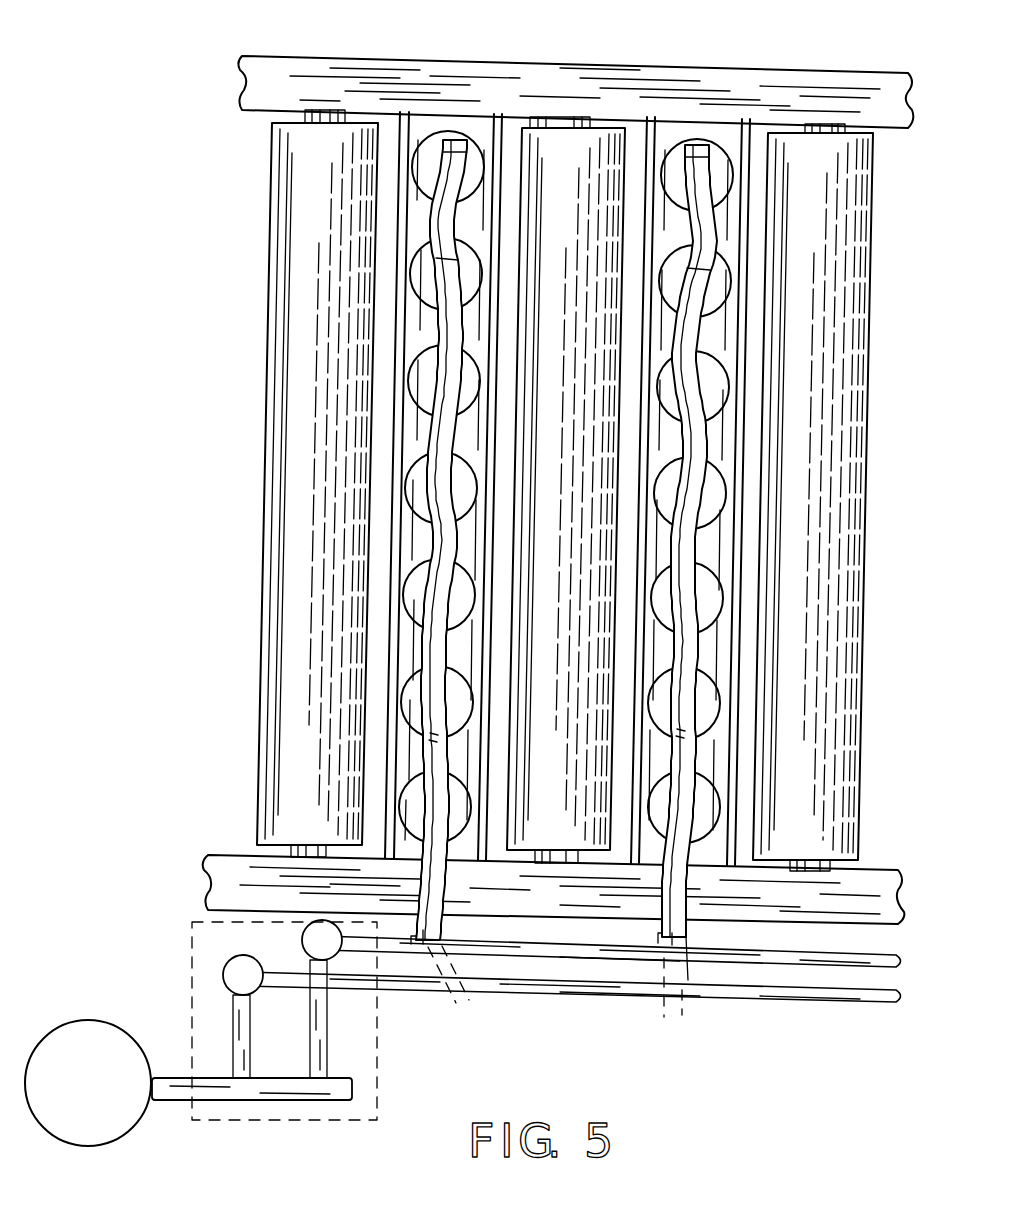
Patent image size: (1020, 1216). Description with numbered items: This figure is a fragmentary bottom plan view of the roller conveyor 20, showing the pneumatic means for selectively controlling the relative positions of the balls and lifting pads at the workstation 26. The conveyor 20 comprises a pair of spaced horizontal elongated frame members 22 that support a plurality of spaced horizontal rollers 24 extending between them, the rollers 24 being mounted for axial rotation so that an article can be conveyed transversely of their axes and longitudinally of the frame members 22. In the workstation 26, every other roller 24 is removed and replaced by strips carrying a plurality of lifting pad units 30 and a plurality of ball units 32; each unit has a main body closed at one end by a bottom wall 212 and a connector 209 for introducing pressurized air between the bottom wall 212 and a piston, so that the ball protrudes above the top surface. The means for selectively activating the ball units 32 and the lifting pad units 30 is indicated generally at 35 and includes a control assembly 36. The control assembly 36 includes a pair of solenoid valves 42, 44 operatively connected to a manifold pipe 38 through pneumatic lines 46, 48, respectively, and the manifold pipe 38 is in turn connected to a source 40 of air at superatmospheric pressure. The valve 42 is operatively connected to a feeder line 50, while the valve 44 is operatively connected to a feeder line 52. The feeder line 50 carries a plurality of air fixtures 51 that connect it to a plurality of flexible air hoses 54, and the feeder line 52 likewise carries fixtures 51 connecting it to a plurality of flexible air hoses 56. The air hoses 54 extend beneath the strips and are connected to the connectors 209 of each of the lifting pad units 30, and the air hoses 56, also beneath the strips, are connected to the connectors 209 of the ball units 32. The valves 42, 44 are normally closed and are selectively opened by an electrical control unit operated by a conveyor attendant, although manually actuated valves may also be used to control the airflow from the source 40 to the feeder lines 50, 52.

The roller conveyor 20 is at (785, 40).
The frame members 22 is at (258, 72).
The rollers 24 is at (538, 117).
The workstation 26 is at (646, 51).
The lifting pad units 30 is at (400, 288).
The ball units 32 is at (410, 189).
The means for selectively activating the ball units and lifting pad units 35 is at (316, 1148).
The control assembly 36 is at (199, 992).
The manifold pipe 38 is at (178, 1100).
The source of air at superatmospheric pressure 40 is at (116, 1128).
The solenoid valve 42 is at (226, 968).
The solenoid valve 44 is at (304, 936).
The pneumatic line 46 is at (248, 1057).
The pneumatic line 48 is at (322, 1022).
The feeder line 50 is at (647, 988).
The air fixtures 51 is at (458, 1005).
The feeder line 52 is at (838, 958).
The flexible air hoses 54 is at (435, 737).
The flexible air hoses 56 is at (415, 695).
The connector 209 is at (437, 140).
The bottom wall 212 is at (413, 487).